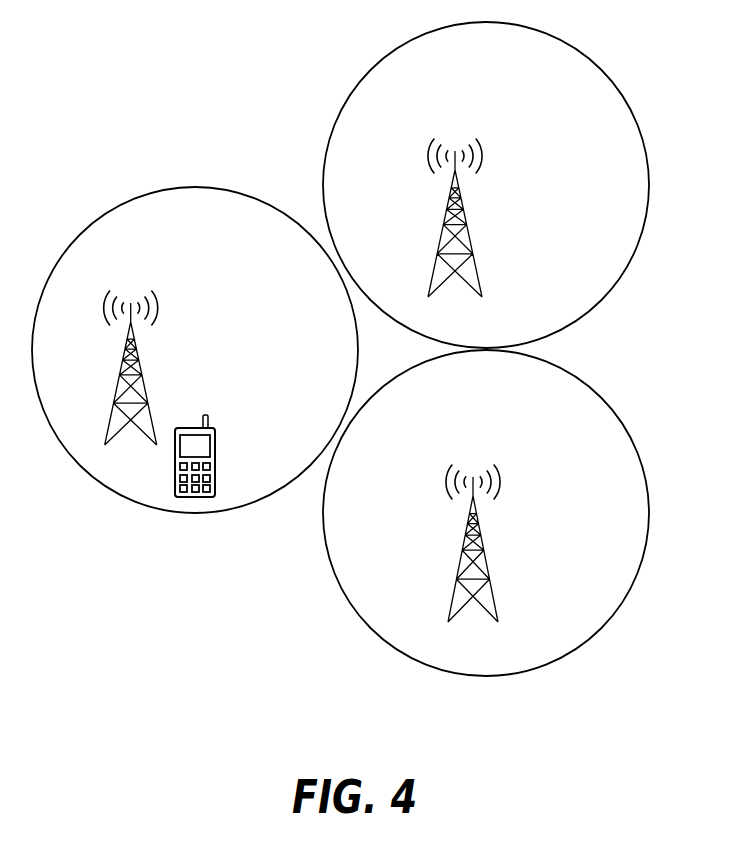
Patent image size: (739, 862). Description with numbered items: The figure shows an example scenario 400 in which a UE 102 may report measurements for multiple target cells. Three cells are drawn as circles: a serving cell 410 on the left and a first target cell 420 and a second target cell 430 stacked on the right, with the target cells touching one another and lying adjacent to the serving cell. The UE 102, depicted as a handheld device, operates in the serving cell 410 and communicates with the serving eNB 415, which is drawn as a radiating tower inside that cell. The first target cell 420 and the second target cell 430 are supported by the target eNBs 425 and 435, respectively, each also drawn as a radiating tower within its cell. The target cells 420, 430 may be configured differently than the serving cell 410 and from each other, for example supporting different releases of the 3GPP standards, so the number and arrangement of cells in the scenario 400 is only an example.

The example scenario 400 is at (148, 713).
The serving cell 410 is at (238, 190).
The serving eNB 415 is at (141, 377).
The first target cell 420 is at (578, 50).
The target eNB 425 is at (467, 223).
The second target cell 430 is at (597, 390).
The target eNB 435 is at (483, 550).
The UE 102 is at (215, 461).